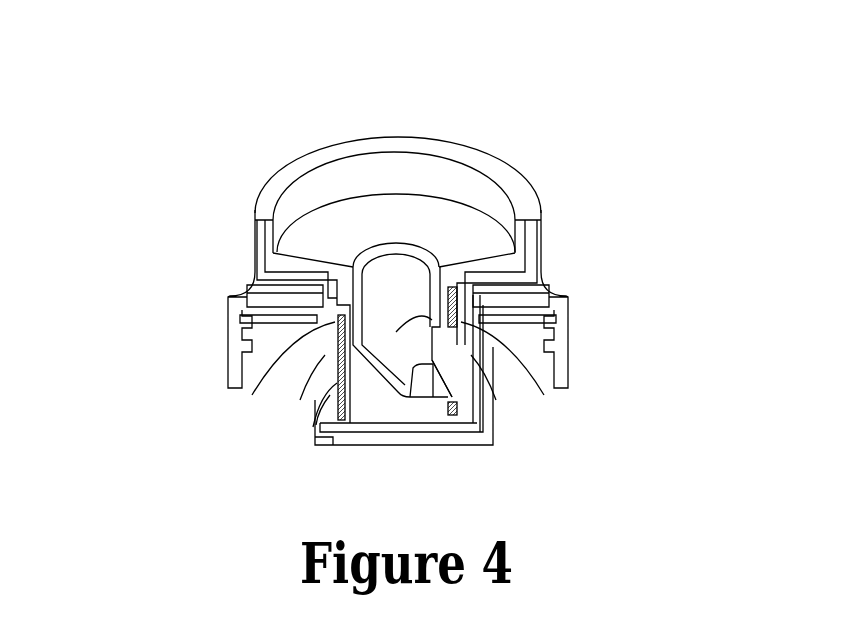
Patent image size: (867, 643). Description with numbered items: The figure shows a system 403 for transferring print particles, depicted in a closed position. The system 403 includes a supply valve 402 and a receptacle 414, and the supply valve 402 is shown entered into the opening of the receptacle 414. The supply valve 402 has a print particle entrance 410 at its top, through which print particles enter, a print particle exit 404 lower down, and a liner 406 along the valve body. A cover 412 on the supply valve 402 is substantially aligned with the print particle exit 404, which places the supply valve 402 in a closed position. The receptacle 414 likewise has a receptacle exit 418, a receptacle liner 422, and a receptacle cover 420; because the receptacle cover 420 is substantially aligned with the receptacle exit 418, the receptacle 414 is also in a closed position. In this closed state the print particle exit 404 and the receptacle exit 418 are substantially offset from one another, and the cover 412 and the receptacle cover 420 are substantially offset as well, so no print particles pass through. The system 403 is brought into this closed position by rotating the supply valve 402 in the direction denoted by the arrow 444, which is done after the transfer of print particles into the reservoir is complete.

The system 403 is at (186, 67).
The supply valve 402 is at (538, 190).
The print particle exit 404 is at (462, 383).
The liner 406 is at (458, 308).
The print particle entrance 410 is at (397, 278).
The cover 412 is at (464, 398).
The receptacle 414 is at (337, 438).
The receptacle exit 418 is at (338, 352).
The receptacle cover 420 is at (347, 388).
The receptacle liner 422 is at (320, 424).
The arrow 444 is at (765, 132).